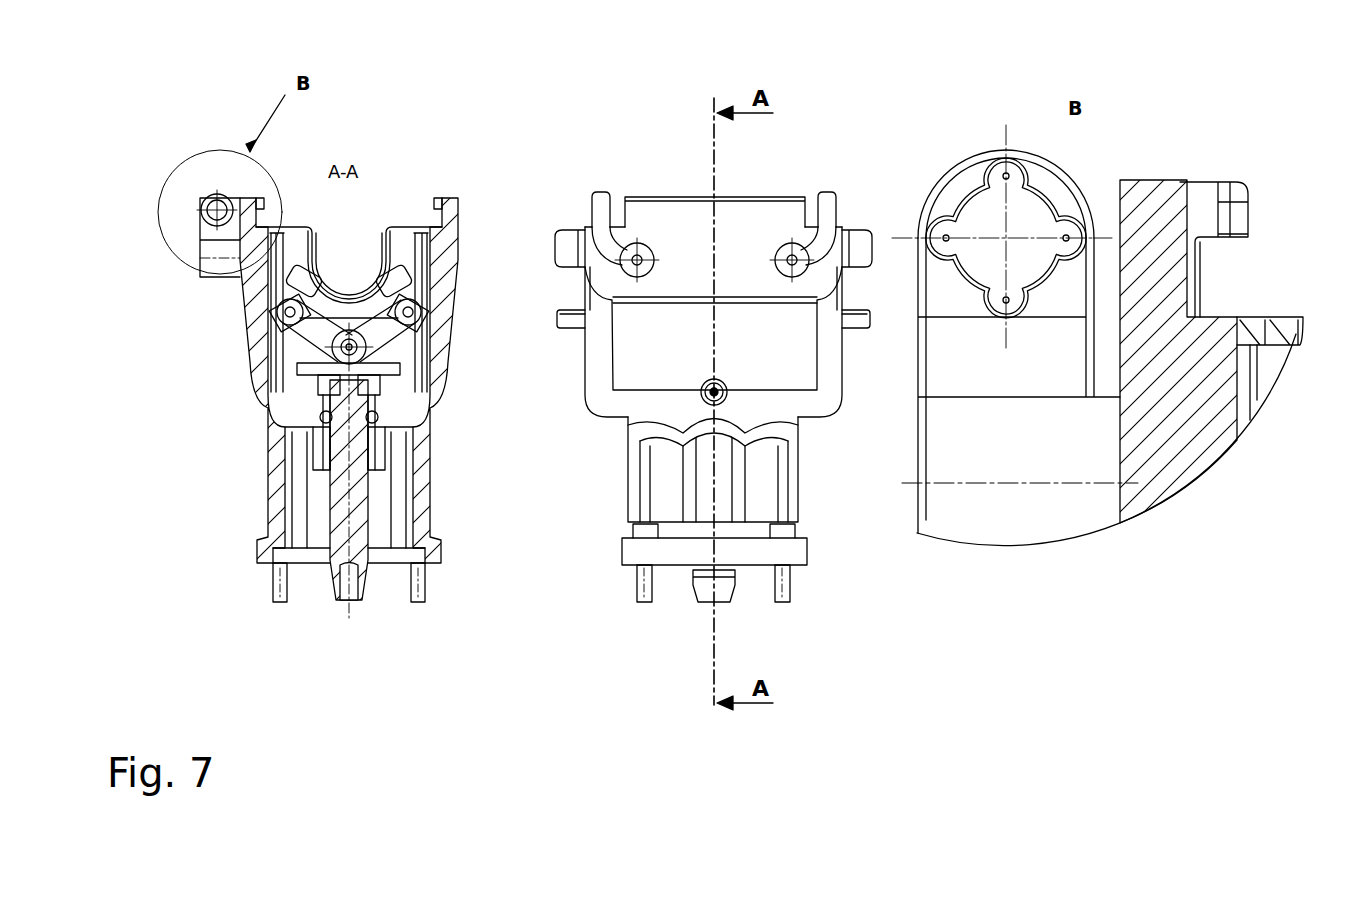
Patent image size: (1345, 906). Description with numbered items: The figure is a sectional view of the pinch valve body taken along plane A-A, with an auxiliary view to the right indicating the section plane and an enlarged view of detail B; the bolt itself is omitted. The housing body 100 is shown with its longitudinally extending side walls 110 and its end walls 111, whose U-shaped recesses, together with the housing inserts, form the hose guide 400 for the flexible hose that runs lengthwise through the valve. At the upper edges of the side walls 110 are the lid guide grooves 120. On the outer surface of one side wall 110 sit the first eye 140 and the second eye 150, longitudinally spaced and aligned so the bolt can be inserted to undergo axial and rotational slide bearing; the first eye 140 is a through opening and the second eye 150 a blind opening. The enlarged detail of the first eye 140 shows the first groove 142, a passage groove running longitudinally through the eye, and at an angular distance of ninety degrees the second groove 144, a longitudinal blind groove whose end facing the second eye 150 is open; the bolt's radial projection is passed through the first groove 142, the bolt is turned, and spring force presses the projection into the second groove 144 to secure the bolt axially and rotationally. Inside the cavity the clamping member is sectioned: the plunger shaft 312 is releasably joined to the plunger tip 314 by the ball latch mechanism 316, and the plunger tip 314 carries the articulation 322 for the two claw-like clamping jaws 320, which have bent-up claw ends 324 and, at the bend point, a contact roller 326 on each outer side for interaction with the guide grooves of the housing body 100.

The housing body 100 is at (600, 84).
The side walls 110 is at (253, 367).
The end walls 111 is at (588, 373).
The lid guide groove 120 is at (238, 197).
The first eye 140 is at (215, 210).
The first groove 142 is at (1072, 238).
The second groove 144 is at (1005, 172).
The second eye 150 is at (827, 200).
The plunger shaft 312 is at (355, 503).
The plunger tip 314 is at (375, 356).
The ball latch mechanism 316 is at (412, 401).
The clamping jaws 320 is at (315, 323).
The articulation 322 is at (353, 349).
The claw ends 324 is at (303, 280).
The contact roller 326 is at (290, 312).
The hose guide 400 is at (345, 248).